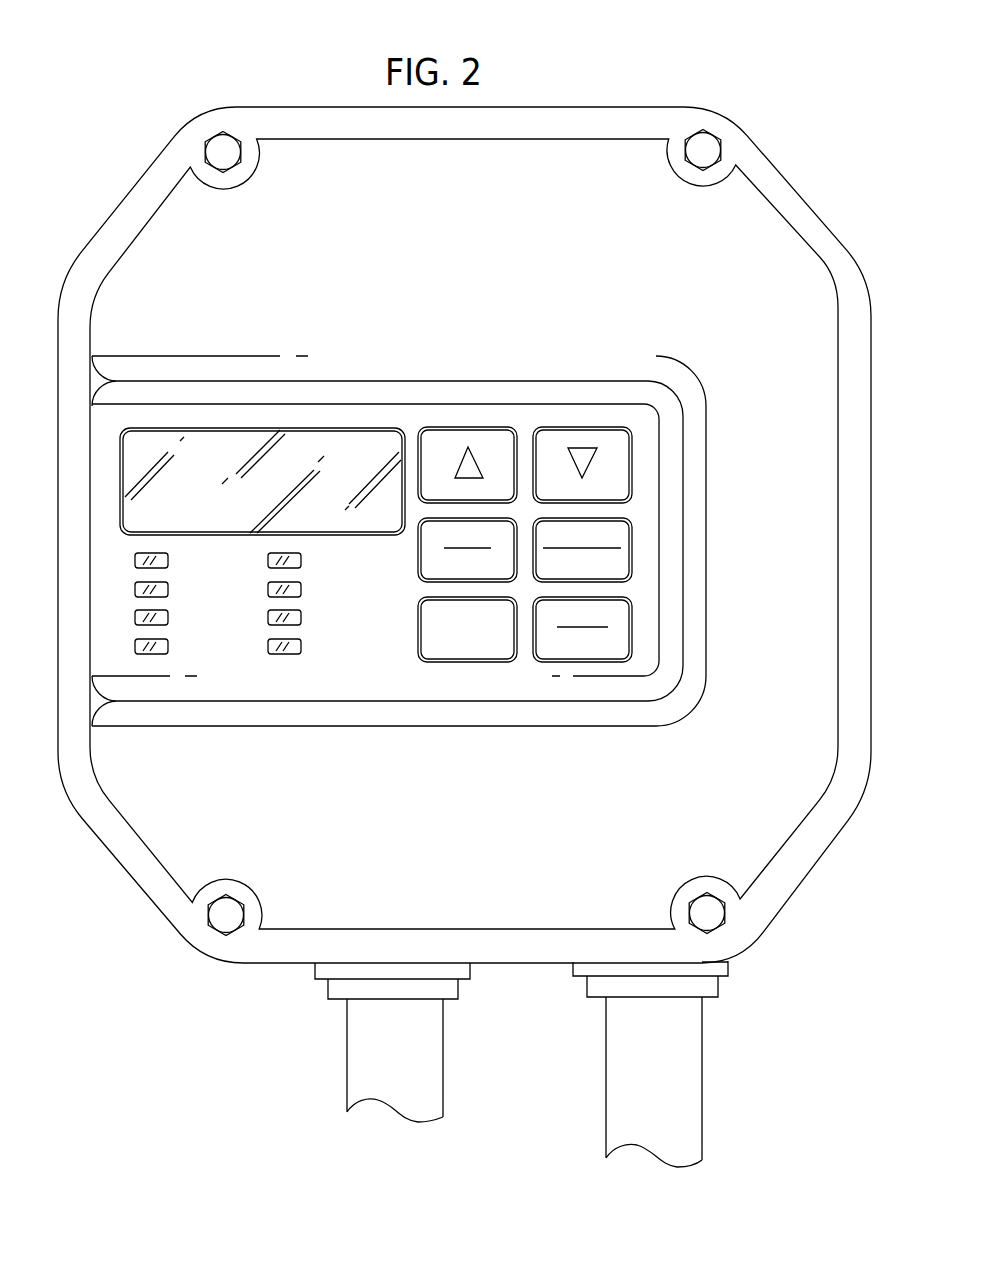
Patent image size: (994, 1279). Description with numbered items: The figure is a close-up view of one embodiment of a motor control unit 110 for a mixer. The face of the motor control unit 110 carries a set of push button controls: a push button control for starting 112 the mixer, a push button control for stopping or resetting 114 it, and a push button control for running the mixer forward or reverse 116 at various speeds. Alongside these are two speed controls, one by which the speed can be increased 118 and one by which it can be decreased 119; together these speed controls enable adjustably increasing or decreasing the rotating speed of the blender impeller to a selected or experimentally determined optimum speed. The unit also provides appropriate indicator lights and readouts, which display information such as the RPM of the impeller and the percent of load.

The motor control unit 110 is at (753, 84).
The starting push button control 112 is at (472, 662).
The stopping or resetting push button control 114 is at (592, 662).
The forward or reverse push button control 116 is at (633, 547).
The speed increase control 118 is at (497, 427).
The speed decrease control 119 is at (633, 463).